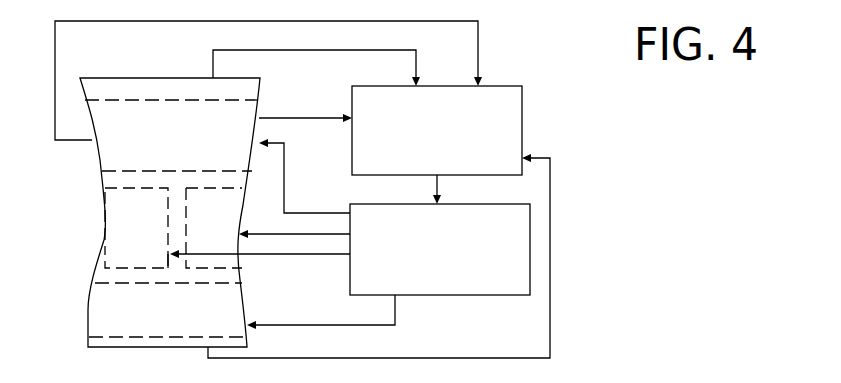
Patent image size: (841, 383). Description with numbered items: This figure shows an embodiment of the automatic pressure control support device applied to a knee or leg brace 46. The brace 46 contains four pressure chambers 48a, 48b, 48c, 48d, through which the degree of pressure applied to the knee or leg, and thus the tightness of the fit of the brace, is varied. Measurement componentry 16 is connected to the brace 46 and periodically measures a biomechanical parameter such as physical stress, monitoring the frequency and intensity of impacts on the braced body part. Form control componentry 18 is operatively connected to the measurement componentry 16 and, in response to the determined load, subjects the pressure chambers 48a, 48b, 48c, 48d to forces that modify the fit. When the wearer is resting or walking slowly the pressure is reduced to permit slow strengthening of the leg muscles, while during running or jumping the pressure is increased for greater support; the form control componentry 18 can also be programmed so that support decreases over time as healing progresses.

The measurement componentry 16 is at (523, 116).
The form control componentry 18 is at (437, 296).
The knee brace 46 is at (138, 78).
The pressure chamber 48a is at (110, 150).
The pressure chamber 48b is at (122, 243).
The pressure chamber 48c is at (250, 263).
The pressure chamber 48d is at (105, 317).